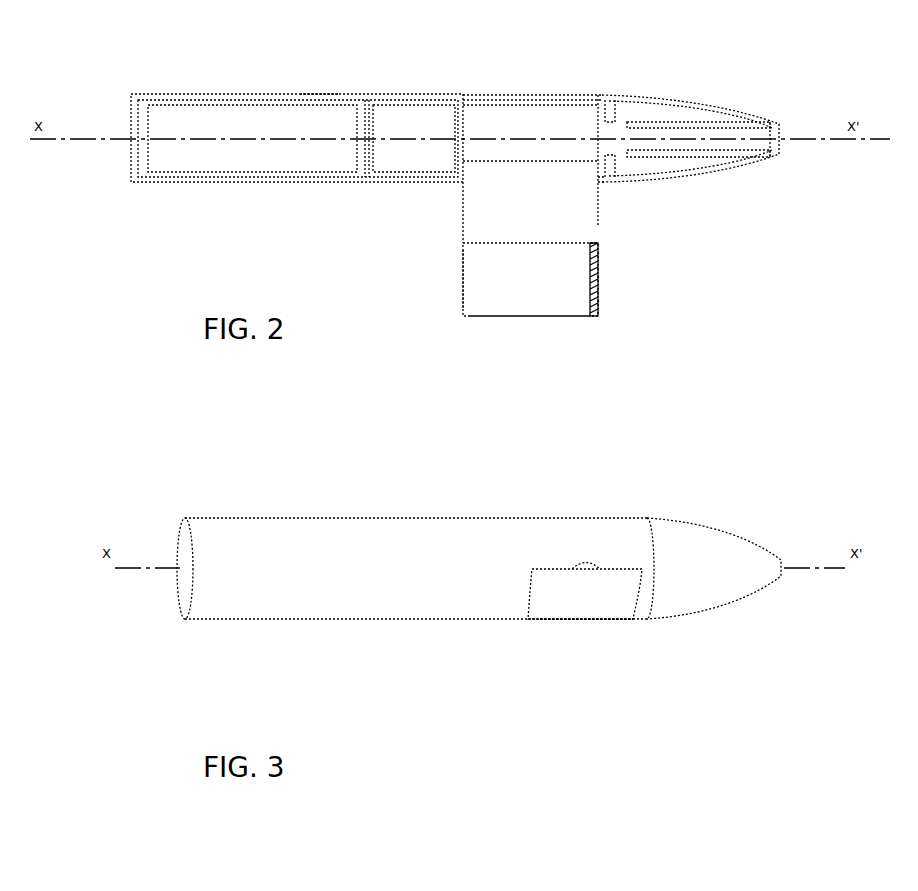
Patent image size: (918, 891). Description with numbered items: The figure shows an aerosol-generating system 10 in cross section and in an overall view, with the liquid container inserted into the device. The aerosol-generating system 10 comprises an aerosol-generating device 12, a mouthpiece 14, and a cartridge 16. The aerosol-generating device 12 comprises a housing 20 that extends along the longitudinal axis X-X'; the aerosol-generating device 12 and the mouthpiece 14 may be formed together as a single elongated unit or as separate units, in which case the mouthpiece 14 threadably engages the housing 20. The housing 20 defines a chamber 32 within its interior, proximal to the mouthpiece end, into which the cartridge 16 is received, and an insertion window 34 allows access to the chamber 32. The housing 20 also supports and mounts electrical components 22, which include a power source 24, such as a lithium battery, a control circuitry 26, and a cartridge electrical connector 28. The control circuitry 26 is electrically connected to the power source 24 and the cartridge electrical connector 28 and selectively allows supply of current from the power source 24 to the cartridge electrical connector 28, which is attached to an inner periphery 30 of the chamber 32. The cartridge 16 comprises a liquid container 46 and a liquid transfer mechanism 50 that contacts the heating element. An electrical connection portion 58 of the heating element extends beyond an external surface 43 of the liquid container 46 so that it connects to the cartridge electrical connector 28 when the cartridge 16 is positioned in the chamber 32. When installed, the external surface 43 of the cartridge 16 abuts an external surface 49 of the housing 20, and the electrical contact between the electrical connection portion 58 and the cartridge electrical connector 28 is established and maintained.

In FIG. 2, the aerosol-generating system 10 is at (102, 197).
In FIG. 3, the aerosol-generating system 10 is at (131, 588).
In FIG. 2, the aerosol-generating device 12 is at (185, 186).
In FIG. 3, the aerosol-generating device 12 is at (211, 624).
In FIG. 2, the mouthpiece 14 is at (722, 105).
In FIG. 3, the mouthpiece 14 is at (735, 531).
In FIG. 2, the cartridge 16 is at (458, 266).
In FIG. 3, the cartridge 16 is at (574, 625).
In FIG. 2, the housing 20 is at (305, 184).
In FIG. 3, the housing 20 is at (345, 620).
In FIG. 2, the electrical components 22 is at (313, 101).
In FIG. 2, the power source 24 is at (178, 101).
In FIG. 2, the control circuitry 26 is at (407, 102).
In FIG. 2, the cartridge electrical connector 28 is at (513, 107).
In FIG. 2, the inner periphery 30 is at (557, 107).
In FIG. 2, the chamber 32 is at (528, 132).
In FIG. 2, the insertion window 34 is at (553, 163).
In FIG. 2, the external surface 43 is at (565, 316).
In FIG. 3, the external surface 43 is at (596, 620).
In FIG. 2, the liquid container 46 is at (463, 297).
In FIG. 2, the external surface 49 is at (394, 184).
In FIG. 3, the external surface 49 is at (405, 620).
In FIG. 2, the liquid transfer mechanism 50 is at (600, 289).
In FIG. 2, the electrical connection portion 58 is at (585, 240).